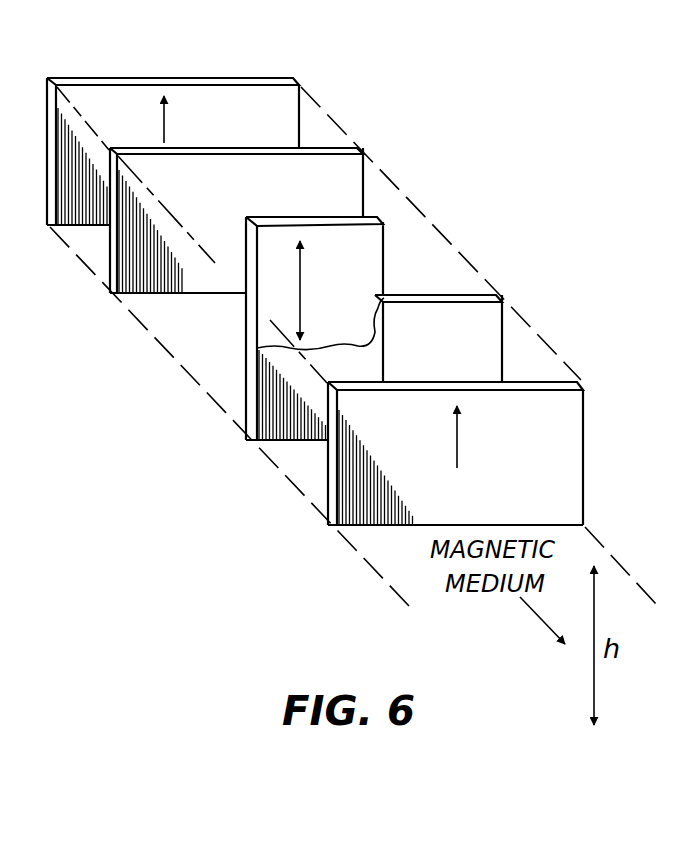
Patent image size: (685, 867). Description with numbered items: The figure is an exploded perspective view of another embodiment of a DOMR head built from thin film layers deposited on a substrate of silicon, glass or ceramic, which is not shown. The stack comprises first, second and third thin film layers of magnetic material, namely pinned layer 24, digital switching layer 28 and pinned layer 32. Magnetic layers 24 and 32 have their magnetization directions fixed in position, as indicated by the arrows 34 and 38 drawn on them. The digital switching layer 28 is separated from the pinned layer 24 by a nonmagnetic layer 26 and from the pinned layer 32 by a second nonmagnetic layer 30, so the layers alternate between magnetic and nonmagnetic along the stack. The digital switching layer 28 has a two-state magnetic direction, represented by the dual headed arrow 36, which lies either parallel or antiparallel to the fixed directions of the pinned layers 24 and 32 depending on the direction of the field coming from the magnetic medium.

The first thin film layer of magnetic material 24 is at (250, 78).
The nonmagnetic layer 26 is at (340, 192).
The digital switching layer 28 is at (380, 260).
The nonmagnetic layer 30 is at (488, 338).
The third thin film layer of magnetic material 32 is at (583, 420).
The arrow 34 is at (164, 127).
The dual headed arrow 36 is at (300, 287).
The arrow 38 is at (457, 446).